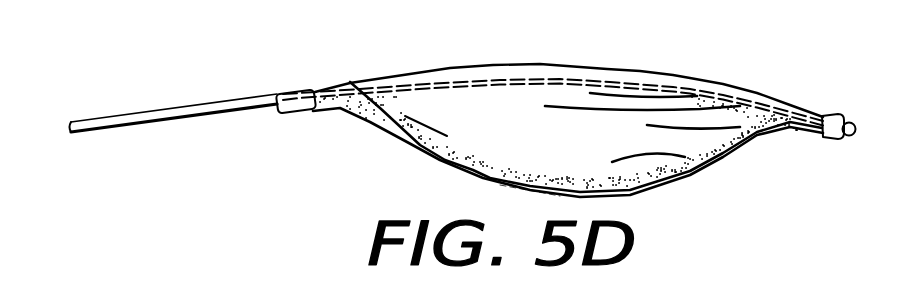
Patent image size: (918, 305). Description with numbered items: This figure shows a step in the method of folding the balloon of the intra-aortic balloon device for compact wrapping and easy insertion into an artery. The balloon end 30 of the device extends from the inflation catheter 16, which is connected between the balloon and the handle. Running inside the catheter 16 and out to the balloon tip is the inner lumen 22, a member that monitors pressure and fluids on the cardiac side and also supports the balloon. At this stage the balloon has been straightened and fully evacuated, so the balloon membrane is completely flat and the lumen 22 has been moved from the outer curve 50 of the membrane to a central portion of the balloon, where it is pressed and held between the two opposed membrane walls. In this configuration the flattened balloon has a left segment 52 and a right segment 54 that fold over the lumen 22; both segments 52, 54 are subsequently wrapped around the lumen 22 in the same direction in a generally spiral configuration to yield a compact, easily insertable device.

The inflation catheter 16 is at (176, 107).
The inner lumen 22 is at (576, 79).
The balloon end 30 is at (708, 189).
The outer curve 50 is at (423, 69).
The left segment 52 is at (419, 147).
The right segment 54 is at (366, 120).